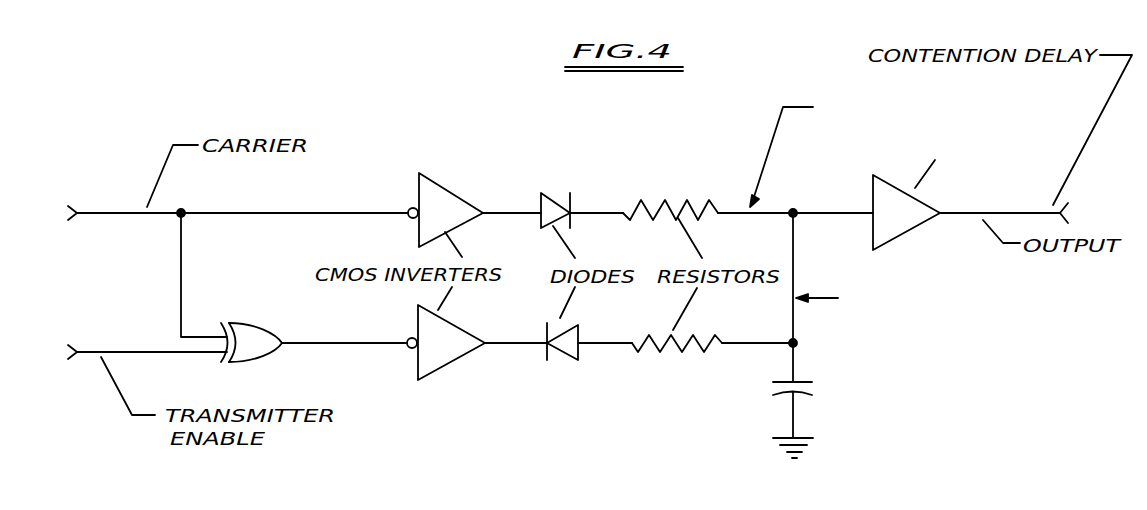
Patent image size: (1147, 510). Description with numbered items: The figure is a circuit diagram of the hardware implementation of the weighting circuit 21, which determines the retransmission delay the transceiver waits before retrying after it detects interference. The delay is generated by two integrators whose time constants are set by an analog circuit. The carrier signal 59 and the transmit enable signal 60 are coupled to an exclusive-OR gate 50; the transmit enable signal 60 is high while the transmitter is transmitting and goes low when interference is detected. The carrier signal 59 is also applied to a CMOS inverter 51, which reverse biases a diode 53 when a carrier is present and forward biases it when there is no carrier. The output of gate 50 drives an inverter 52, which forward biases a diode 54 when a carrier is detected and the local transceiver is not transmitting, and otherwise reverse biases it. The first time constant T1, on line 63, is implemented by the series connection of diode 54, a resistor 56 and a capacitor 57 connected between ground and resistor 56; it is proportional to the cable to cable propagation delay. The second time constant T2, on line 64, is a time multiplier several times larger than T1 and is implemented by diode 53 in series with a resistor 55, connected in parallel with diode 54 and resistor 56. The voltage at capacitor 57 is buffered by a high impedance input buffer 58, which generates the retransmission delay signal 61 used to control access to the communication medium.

The weighting circuit 21 is at (622, 393).
The exclusive-OR gate 50 is at (277, 315).
The CMOS inverter 51 is at (452, 190).
The inverter 52 is at (465, 330).
The diode 53 is at (558, 200).
The diode 54 is at (555, 350).
The resistor 55 is at (686, 200).
The resistor 56 is at (682, 333).
The capacitor 57 is at (802, 397).
The buffer 58 is at (915, 195).
The carrier signal 59 is at (104, 215).
The transmit enable signal 60 is at (138, 353).
The retransmission delay signal 61 is at (1048, 207).
The line carrying first time constant T1 63 is at (850, 283).
The line carrying second time constant T2 64 is at (802, 93).